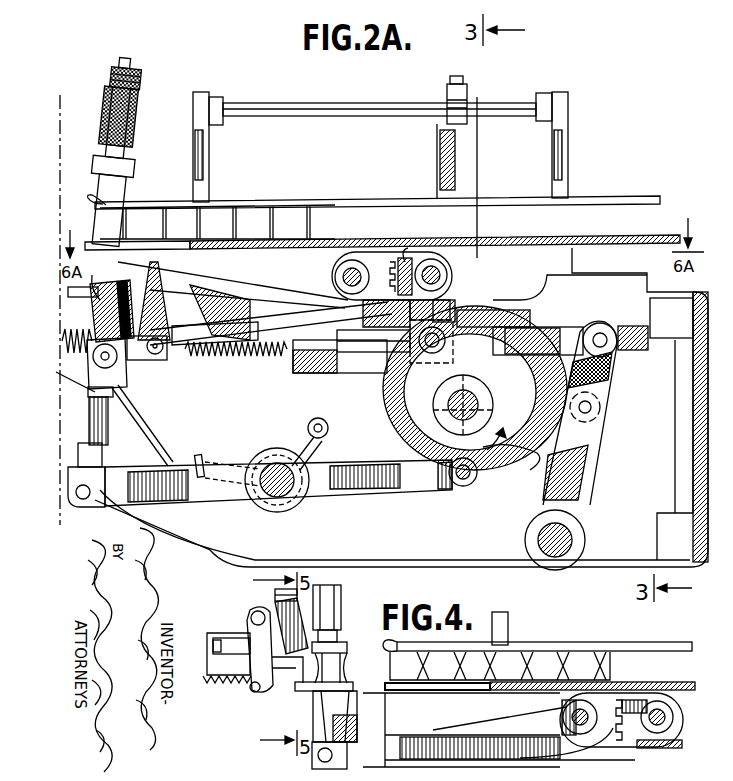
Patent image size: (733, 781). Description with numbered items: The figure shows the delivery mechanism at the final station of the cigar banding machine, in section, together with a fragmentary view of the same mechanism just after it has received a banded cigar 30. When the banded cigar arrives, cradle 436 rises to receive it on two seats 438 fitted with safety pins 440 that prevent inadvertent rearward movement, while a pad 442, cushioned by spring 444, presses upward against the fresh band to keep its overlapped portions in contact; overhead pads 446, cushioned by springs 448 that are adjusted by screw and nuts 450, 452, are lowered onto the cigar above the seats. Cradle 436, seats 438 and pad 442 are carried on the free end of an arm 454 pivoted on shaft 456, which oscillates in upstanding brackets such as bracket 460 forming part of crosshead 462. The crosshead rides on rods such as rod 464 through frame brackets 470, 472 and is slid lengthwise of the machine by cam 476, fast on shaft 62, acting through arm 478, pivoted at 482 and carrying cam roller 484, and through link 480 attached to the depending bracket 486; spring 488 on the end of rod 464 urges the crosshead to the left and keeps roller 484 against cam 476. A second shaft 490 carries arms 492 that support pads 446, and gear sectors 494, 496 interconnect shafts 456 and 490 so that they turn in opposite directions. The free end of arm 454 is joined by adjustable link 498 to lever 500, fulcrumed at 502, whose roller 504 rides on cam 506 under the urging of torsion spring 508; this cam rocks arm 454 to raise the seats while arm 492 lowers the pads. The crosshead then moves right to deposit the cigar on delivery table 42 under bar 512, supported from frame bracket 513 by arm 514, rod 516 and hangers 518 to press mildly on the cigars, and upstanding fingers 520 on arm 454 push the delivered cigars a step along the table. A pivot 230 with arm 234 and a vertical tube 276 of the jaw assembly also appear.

In FIG. 2A, the cigar 30 is at (158, 224).
In FIG. 2A, the delivery table 42 is at (118, 238).
In FIG. 4, the delivery table 42 is at (527, 688).
In FIG. 2A, the horizontal shaft 62 is at (477, 397).
In FIG. 4, the pivot 230 is at (253, 612).
In FIG. 4, the arm 234 is at (255, 637).
In FIG. 4, the vertical tube 276 is at (280, 608).
In FIG. 2A, the cradle 436 is at (128, 362).
In FIG. 4, the cradle 436 is at (312, 746).
In FIG. 2A, the seats 438 is at (157, 283).
In FIG. 4, the seats 438 is at (305, 695).
In FIG. 2A, the safety pins 440 is at (100, 300).
In FIG. 4, the safety pins 440 is at (290, 690).
In FIG. 2A, the pad 442 is at (120, 287).
In FIG. 4, the pad 442 is at (337, 680).
In FIG. 2A, the spring 444 is at (90, 303).
In FIG. 2A, the overhead pads 446 is at (132, 165).
In FIG. 4, the overhead pads 446 is at (338, 640).
In FIG. 2A, the springs 448 is at (142, 107).
In FIG. 2A, the screw 450 is at (132, 62).
In FIG. 2A, the nuts 452 is at (138, 82).
In FIG. 2A, the arm 454 is at (255, 327).
In FIG. 4, the arm 454 is at (440, 740).
In FIG. 2A, the shaft 456 is at (450, 275).
In FIG. 4, the shaft 456 is at (667, 717).
In FIG. 2A, the upstanding bracket 460 is at (392, 262).
In FIG. 4, the upstanding bracket 460 is at (677, 735).
In FIG. 2A, the crosshead 462 is at (478, 306).
In FIG. 2A, the rod 464 is at (630, 330).
In FIG. 2A, the frame bracket 470 is at (530, 307).
In FIG. 2A, the frame bracket 472 is at (293, 371).
In FIG. 2A, the cam 476 is at (505, 472).
In FIG. 2A, the arm 478 is at (593, 460).
In FIG. 2A, the link 480 is at (573, 333).
In FIG. 2A, the pivot 482 is at (563, 538).
In FIG. 2A, the cam roller 484 is at (605, 393).
In FIG. 2A, the depending bracket 486 is at (403, 352).
In FIG. 2A, the spring 488 is at (240, 352).
In FIG. 2A, the shaft 490 is at (343, 262).
In FIG. 4, the shaft 490 is at (577, 717).
In FIG. 2A, the arms 492 is at (124, 193).
In FIG. 4, the arms 492 is at (490, 728).
In FIG. 2A, the gear sector 494 is at (350, 312).
In FIG. 4, the gear sector 494 is at (597, 740).
In FIG. 2A, the gear sector 496 is at (401, 262).
In FIG. 4, the gear sector 496 is at (640, 723).
In FIG. 2A, the adjustable link 498 is at (105, 427).
In FIG. 4, the adjustable link 498 is at (400, 762).
In FIG. 2A, the lever 500 is at (153, 500).
In FIG. 2A, the fulcrum 502 is at (283, 490).
In FIG. 2A, the roller 504 is at (463, 487).
In FIG. 2A, the cam 506 is at (413, 383).
In FIG. 2A, the torsion spring 508 is at (305, 440).
In FIG. 2A, the bar 512 is at (358, 203).
In FIG. 4, the bar 512 is at (570, 642).
In FIG. 2A, the frame bracket 513 is at (475, 168).
In FIG. 2A, the arm 514 is at (463, 96).
In FIG. 2A, the rod 516 is at (354, 108).
In FIG. 2A, the hangers 518 is at (200, 159).
In FIG. 4, the hangers 518 is at (506, 624).
In FIG. 2A, the upstanding fingers 520 is at (160, 307).
In FIG. 4, the upstanding fingers 520 is at (387, 705).